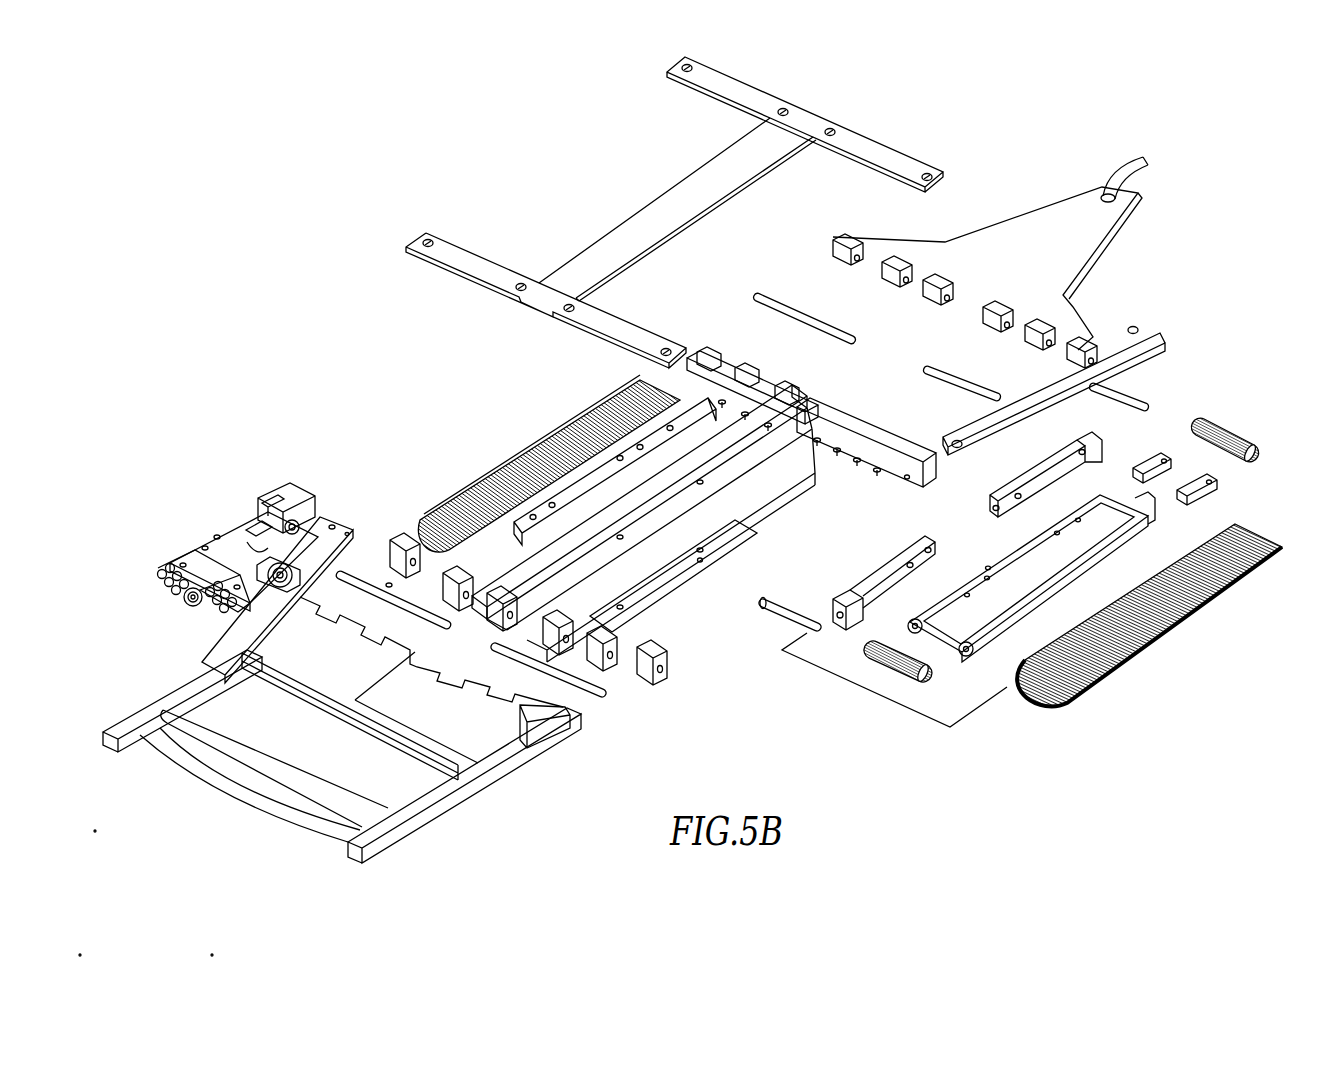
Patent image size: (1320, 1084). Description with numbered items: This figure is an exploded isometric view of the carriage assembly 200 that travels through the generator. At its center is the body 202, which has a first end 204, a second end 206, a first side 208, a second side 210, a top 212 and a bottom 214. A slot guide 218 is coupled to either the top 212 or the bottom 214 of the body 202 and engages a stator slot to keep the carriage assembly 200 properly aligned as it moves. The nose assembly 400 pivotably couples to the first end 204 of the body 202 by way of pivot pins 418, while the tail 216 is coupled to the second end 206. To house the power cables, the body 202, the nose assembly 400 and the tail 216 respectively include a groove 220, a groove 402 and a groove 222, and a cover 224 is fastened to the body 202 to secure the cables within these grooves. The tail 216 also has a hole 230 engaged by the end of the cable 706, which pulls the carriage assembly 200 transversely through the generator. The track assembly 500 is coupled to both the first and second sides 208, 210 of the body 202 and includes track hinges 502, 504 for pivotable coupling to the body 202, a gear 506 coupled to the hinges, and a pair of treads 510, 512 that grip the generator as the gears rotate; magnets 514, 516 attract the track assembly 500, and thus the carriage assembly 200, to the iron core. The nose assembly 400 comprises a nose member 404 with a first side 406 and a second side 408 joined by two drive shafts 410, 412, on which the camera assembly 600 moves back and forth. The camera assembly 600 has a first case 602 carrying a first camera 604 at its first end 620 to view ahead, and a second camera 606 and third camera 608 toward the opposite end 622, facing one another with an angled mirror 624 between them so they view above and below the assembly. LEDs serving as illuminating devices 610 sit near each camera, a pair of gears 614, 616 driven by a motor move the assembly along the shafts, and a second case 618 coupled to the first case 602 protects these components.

The carriage assembly 200 is at (799, 769).
The body 202 is at (778, 457).
The first end 204 is at (398, 528).
The second end 206 is at (672, 348).
The first side 208 is at (733, 487).
The second side 210 is at (686, 465).
The top 212 is at (633, 508).
The bottom 214 is at (620, 570).
The tail 216 is at (1086, 243).
The slot guide 218 is at (660, 587).
The groove 220 is at (780, 417).
The groove 222 is at (990, 262).
The cover 224 is at (692, 192).
The hole 230 is at (1106, 192).
The nose assembly 400 is at (533, 790).
The groove 402 is at (382, 687).
The nose member 404 is at (530, 733).
The first side 406 is at (438, 805).
The second side 408 is at (177, 687).
The drive shaft 410 is at (198, 720).
The drive shaft 412 is at (378, 727).
The pivot pin 418 is at (423, 622).
The track assembly 500 is at (473, 473).
The track hinge 502 is at (668, 432).
The track hinge 504 is at (513, 562).
The gear 506 is at (1223, 427).
The tread 510 is at (1083, 693).
The tread 512 is at (584, 412).
The magnet 514 is at (1007, 557).
The magnet 516 is at (540, 435).
The camera assembly 600 is at (212, 472).
The first case 602 is at (243, 613).
The first camera 604 is at (200, 577).
The second camera 606 is at (273, 533).
The third camera 608 is at (293, 517).
The illuminating device 610 is at (267, 517).
The gear 614 is at (303, 582).
The gear 616 is at (267, 589).
The second case 618 is at (200, 553).
The first end 620 is at (158, 546).
The opposite end 622 is at (389, 588).
The mirror 624 is at (262, 512).
The cable 706 is at (1150, 172).